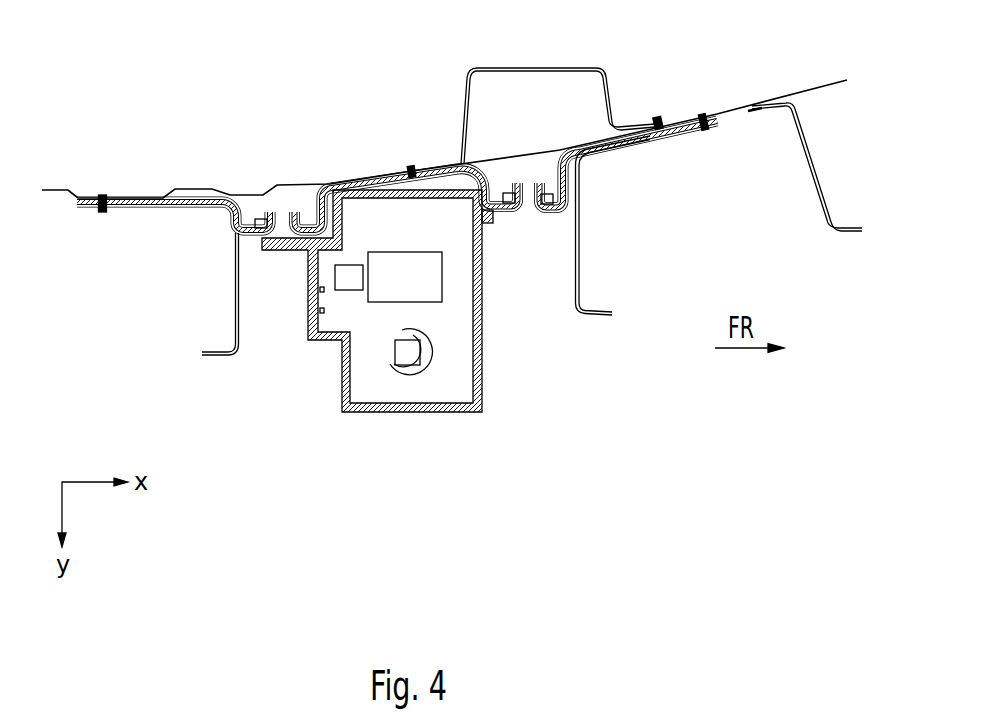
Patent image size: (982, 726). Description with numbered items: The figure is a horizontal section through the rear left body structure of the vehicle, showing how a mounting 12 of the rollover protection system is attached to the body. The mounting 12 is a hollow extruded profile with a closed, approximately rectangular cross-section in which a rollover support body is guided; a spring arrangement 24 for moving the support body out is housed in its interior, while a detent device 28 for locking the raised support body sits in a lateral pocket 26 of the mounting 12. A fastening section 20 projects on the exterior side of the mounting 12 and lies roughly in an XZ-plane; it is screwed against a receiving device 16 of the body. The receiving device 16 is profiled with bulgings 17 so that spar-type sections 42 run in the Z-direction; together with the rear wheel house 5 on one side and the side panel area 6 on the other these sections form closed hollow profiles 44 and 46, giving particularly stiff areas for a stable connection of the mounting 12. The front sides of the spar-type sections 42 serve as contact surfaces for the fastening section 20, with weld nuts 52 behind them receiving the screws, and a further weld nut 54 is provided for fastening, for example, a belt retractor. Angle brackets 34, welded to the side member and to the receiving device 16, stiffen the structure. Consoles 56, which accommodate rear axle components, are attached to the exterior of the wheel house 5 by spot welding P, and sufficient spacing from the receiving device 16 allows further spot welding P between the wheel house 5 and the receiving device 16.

The rear wheel house 5 is at (55, 189).
The side panel area 6 is at (813, 147).
The mounting 12 is at (465, 408).
The receiving device 16 is at (81, 210).
The bulging 17 is at (246, 221).
The fastening section 20 is at (267, 265).
The spring arrangement 24 is at (410, 371).
The lateral pocket 26 is at (332, 323).
The detent device 28 is at (350, 277).
The angle bracket 34 is at (215, 360).
The spar-type section 42 is at (246, 233).
The hollow profile 44 is at (309, 198).
The hollow profile 46 is at (551, 175).
The weld nut 52 is at (265, 217).
The weld nut 54 is at (510, 193).
The console 56 is at (603, 73).
The spot welding P is at (102, 196).